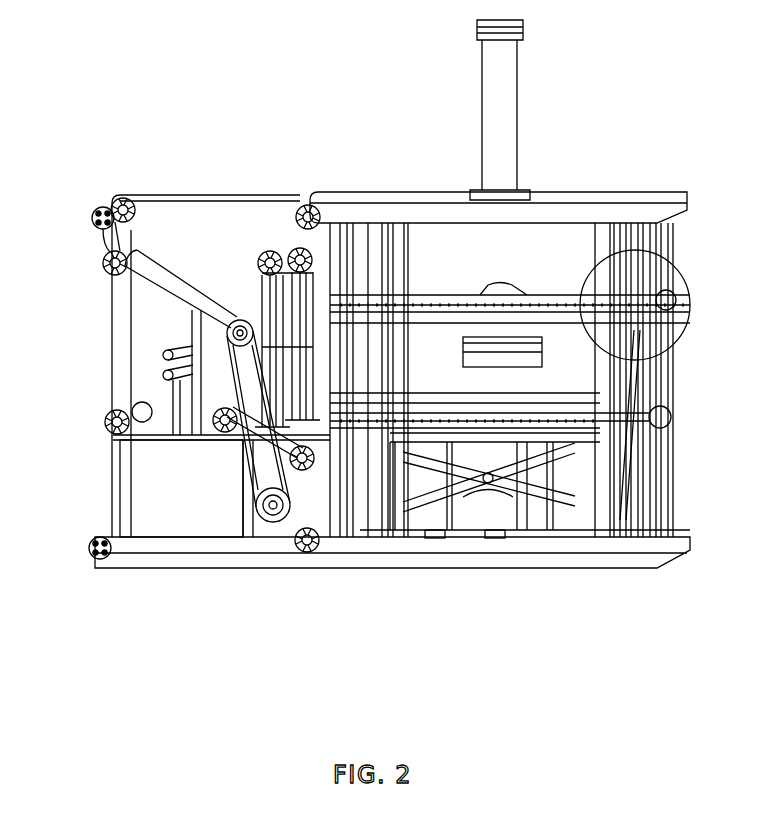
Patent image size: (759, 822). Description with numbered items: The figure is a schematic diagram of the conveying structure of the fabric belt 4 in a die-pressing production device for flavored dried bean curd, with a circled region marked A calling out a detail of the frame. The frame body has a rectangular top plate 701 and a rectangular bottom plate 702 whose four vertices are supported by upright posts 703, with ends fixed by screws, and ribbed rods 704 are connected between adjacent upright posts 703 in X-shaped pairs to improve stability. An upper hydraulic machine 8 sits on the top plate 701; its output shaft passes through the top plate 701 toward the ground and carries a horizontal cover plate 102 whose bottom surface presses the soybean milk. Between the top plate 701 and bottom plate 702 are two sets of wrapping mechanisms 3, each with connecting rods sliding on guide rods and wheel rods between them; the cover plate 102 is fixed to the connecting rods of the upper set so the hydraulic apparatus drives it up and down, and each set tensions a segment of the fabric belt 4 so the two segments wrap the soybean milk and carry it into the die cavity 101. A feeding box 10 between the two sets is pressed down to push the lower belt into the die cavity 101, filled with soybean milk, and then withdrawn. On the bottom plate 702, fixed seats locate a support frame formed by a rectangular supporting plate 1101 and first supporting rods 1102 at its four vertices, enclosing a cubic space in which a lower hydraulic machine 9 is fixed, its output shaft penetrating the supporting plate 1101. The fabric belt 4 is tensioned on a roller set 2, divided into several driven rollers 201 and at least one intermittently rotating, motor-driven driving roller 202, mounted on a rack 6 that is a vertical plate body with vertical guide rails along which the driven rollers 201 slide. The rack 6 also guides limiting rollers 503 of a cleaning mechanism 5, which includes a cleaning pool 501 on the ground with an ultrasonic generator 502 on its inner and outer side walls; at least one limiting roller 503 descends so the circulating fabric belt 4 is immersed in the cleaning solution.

The roller set 2 is at (213, 162).
The driven rollers 201 is at (97, 210).
The driving roller 202 is at (267, 252).
The rack 6 is at (300, 210).
The fabric belt 4 is at (165, 282).
The ultrasonic generator 502 is at (170, 400).
The cleaning mechanism 5 is at (48, 515).
The cleaning pool 501 is at (137, 530).
The limiting rollers 503 is at (96, 560).
The upper hydraulic machine 8 is at (500, 115).
The wrapping mechanism 3 is at (560, 240).
The top plate 701 is at (645, 210).
The die cavity 101 is at (468, 400).
The cover plate 102 is at (482, 283).
The feeding box 10 is at (500, 362).
The bottom plate 702 is at (560, 540).
The lower hydraulic machine 9 is at (498, 520).
The ribbed rods 704 is at (437, 550).
The upright posts 703 is at (605, 507).
The supporting plate 1101 is at (435, 548).
The first supporting rods 1102 is at (495, 548).
The detail A is at (678, 268).